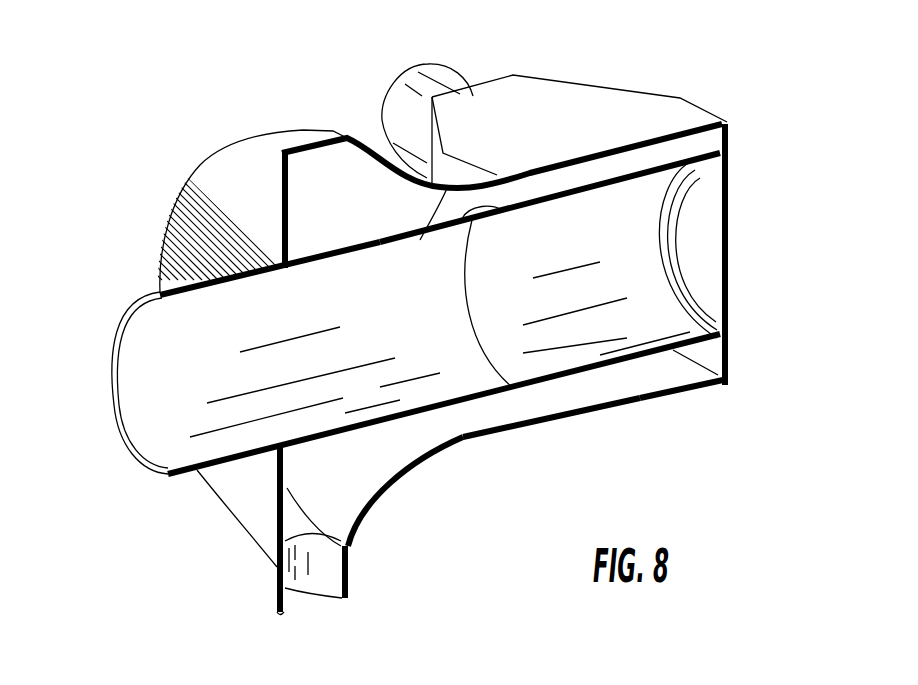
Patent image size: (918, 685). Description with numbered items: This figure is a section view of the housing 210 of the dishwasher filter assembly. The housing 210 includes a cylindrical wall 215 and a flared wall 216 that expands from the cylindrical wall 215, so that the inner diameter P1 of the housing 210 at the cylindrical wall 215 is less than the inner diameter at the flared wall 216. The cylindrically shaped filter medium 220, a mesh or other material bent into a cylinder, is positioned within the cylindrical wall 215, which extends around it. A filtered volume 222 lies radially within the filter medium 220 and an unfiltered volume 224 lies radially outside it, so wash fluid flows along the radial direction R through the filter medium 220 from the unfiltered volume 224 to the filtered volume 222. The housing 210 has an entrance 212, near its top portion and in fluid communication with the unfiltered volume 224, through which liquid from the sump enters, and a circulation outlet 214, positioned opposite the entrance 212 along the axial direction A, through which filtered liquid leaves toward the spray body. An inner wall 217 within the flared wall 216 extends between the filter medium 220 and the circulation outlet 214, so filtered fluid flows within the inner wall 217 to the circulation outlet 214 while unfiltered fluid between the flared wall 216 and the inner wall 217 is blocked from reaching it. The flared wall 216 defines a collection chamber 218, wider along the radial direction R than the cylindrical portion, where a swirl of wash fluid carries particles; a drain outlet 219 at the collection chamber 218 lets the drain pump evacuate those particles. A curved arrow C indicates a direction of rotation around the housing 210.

The housing 210 is at (727, 228).
The entrance 212 is at (396, 71).
The circulation outlet 214 is at (157, 417).
The cylindrical wall 215 is at (675, 389).
The flared wall 216 is at (420, 477).
The inner wall 217 is at (303, 268).
The collection chamber 218 is at (317, 460).
The drain outlet 219 is at (311, 604).
The filter medium 220 is at (577, 187).
The filtered volume 222 is at (698, 270).
The unfiltered volume 224 is at (569, 396).
The inner diameter P1 is at (368, 504).
The radial direction R is at (170, 306).
The axial direction A is at (597, 282).
The rotation direction C is at (180, 154).